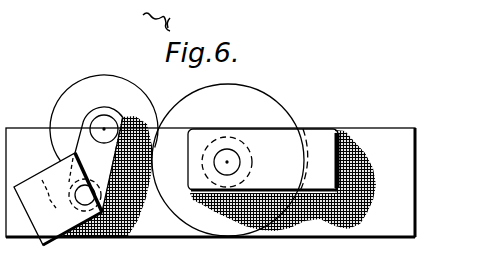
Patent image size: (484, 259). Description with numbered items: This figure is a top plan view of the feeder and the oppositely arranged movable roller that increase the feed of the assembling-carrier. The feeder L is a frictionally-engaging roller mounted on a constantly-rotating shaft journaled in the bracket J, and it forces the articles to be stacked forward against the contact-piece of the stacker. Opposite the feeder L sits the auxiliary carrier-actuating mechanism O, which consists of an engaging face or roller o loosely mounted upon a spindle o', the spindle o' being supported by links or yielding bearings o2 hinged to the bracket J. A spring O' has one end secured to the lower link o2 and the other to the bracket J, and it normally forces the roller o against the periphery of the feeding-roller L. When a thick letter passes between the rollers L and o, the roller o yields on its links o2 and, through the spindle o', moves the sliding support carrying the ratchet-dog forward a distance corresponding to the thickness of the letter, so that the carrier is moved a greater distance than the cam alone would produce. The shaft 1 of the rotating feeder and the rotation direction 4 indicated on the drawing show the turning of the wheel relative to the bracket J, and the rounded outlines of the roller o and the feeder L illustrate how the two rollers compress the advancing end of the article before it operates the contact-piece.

The auxiliary carrier-actuating mechanism O is at (115, 156).
The engaging face or roller o is at (104, 114).
The spindle o' is at (104, 115).
The links or yielding bearings o2 is at (99, 159).
The spring O' is at (58, 199).
The feeder L is at (265, 108).
The bracket J is at (375, 138).
The shaft 1 is at (233, 162).
The direction of rotation 4 is at (97, 88).